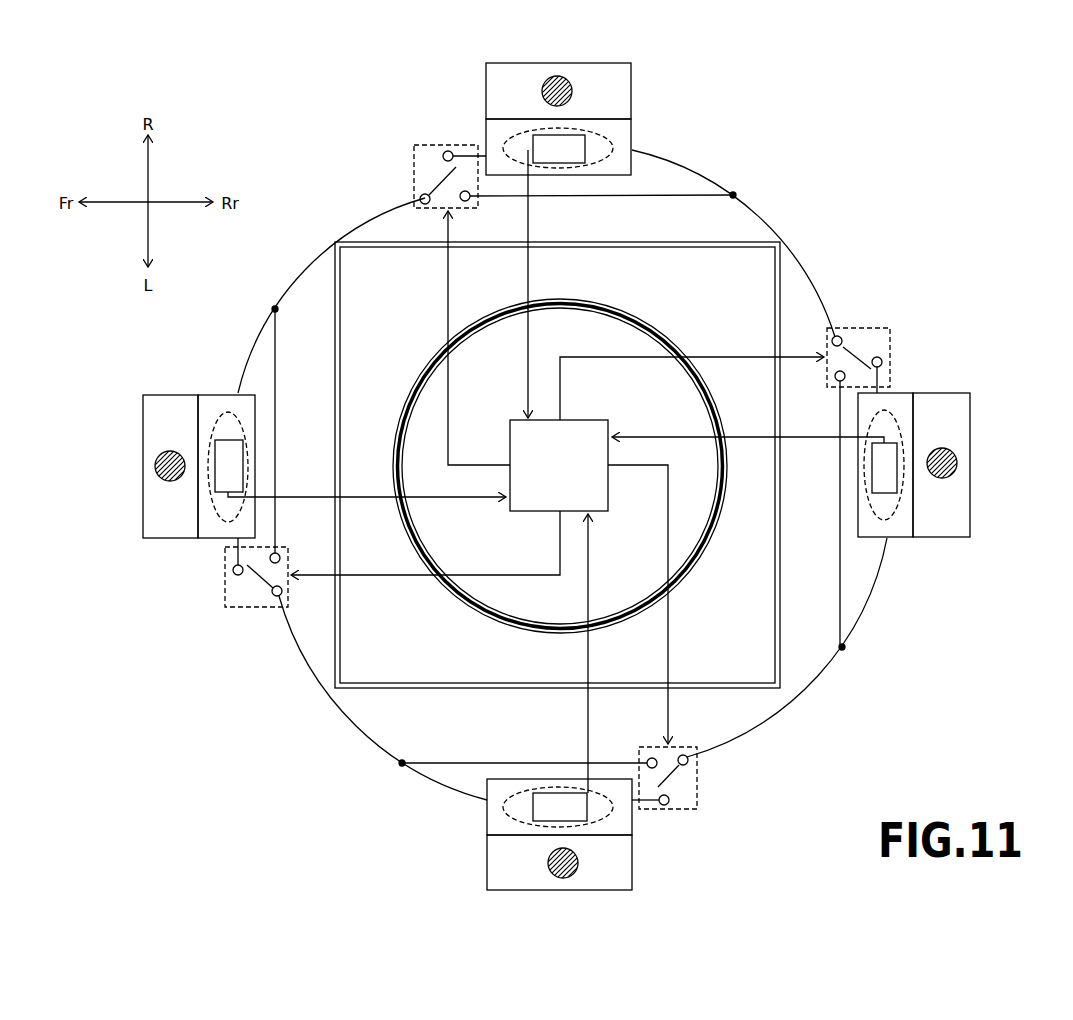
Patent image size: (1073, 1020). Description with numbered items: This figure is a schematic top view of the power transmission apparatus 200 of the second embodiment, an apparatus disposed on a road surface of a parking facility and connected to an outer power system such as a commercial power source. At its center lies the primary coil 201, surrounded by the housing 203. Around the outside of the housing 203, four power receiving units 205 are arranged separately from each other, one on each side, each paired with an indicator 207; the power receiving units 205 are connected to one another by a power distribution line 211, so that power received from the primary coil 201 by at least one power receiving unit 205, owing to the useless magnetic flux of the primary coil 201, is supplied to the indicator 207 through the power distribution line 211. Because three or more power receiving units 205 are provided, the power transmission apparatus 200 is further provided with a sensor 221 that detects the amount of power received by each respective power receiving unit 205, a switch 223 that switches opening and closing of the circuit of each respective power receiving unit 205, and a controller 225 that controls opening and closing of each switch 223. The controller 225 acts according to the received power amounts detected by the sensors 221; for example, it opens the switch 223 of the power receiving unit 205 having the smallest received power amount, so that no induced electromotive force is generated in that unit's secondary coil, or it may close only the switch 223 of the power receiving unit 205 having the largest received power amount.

The power transmission apparatus 200 is at (567, 452).
The primary coil 201 is at (662, 325).
The housing 203 is at (458, 690).
The power receiving unit 205 is at (632, 143).
The indicator 207 is at (632, 98).
The power distribution line 211 is at (812, 259).
The sensor 221 is at (586, 140).
The switch 223 is at (436, 145).
The controller 225 is at (610, 497).